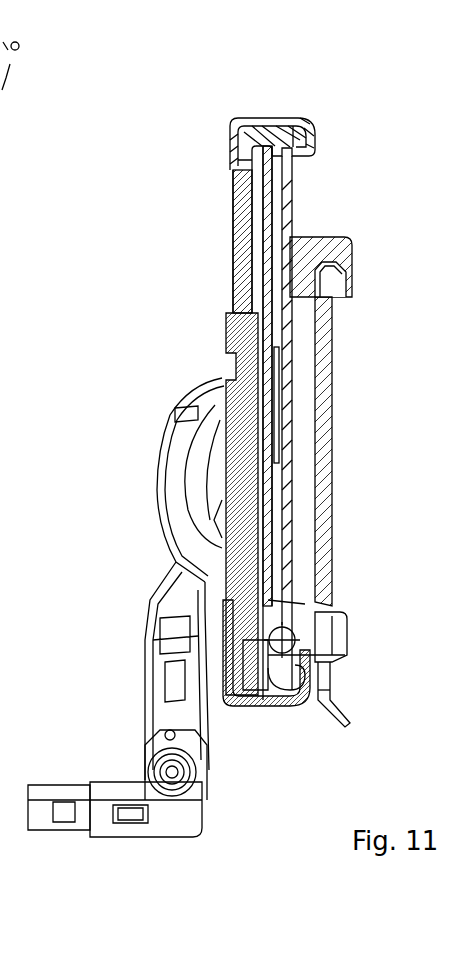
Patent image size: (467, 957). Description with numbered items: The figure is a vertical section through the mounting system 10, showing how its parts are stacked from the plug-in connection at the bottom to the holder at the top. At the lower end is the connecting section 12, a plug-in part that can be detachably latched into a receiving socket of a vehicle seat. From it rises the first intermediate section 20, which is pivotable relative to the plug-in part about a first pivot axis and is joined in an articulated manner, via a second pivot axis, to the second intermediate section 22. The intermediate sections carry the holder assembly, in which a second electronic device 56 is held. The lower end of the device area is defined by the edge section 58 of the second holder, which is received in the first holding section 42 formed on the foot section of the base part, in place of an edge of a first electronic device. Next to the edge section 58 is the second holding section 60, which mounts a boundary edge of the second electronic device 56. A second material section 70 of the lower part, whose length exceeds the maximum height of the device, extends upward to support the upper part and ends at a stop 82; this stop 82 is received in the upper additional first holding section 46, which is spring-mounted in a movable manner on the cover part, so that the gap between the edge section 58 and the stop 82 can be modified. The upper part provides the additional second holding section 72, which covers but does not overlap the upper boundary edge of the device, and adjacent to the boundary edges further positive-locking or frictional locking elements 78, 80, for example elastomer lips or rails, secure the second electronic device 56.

The mounting system 10 is at (432, 90).
The connecting section 12 is at (167, 860).
The first intermediate section 20 is at (185, 615).
The second intermediate section 22 is at (180, 450).
The first holding section 42 is at (305, 703).
The additional first holding section 46 is at (312, 127).
The second electronic device 56 is at (323, 453).
The edge section 58 is at (258, 708).
The second holding section 60 is at (342, 636).
The second material section 70 is at (263, 250).
The additional second holding section 72 is at (338, 258).
The positive-locking or frictional locking element 78 is at (288, 703).
The positive-locking or frictional locking element 80 is at (343, 283).
The stop 82 is at (294, 150).